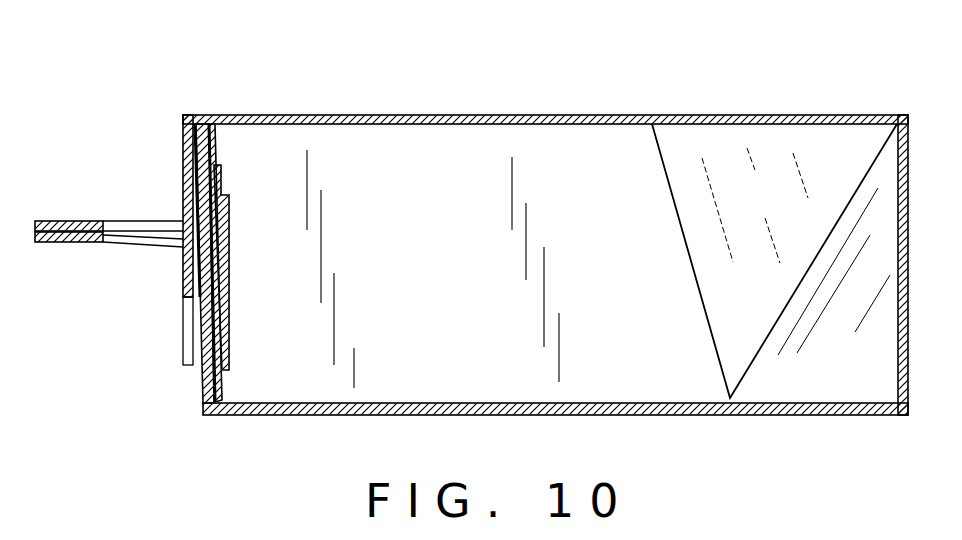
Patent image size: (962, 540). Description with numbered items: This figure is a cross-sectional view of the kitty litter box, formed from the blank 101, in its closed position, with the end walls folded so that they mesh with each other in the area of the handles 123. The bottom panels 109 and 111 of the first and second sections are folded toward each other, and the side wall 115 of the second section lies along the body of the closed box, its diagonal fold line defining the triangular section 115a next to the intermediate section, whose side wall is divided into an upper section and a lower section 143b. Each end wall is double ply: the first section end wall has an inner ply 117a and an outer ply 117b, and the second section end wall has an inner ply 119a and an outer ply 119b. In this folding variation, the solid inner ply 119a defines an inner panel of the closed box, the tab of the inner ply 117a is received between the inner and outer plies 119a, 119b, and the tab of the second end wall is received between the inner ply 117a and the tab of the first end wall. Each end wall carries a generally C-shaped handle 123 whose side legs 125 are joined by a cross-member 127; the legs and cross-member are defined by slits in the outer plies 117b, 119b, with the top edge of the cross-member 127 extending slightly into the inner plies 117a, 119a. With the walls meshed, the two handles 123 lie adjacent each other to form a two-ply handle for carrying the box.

The blank 101 is at (798, 84).
The bottom panel 109 is at (465, 113).
The bottom panel 111 is at (287, 417).
The side wall 115 is at (465, 308).
The triangular section 115a is at (872, 378).
The inner ply 117a is at (213, 142).
The outer ply 117b is at (186, 190).
The inner ply 119a is at (232, 290).
The outer ply 119b is at (202, 387).
The handle 123 is at (65, 212).
The side leg 125 is at (140, 247).
The cross-member 127 is at (57, 243).
The lower section 143b is at (790, 208).